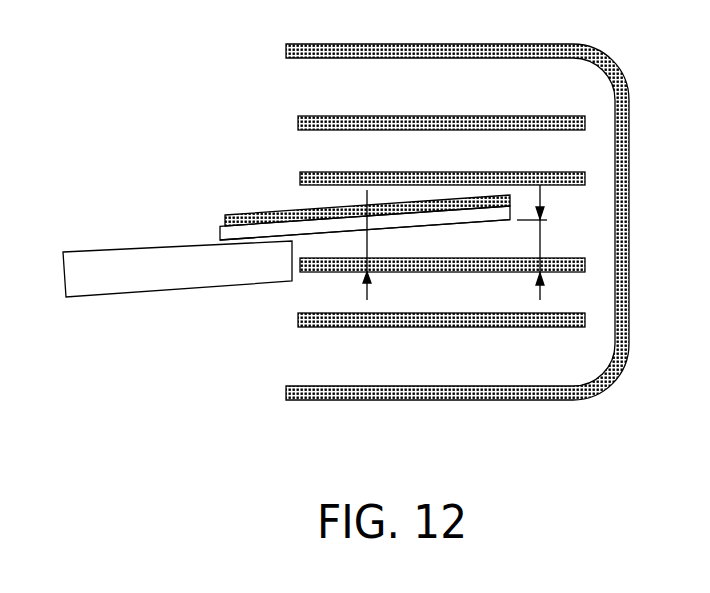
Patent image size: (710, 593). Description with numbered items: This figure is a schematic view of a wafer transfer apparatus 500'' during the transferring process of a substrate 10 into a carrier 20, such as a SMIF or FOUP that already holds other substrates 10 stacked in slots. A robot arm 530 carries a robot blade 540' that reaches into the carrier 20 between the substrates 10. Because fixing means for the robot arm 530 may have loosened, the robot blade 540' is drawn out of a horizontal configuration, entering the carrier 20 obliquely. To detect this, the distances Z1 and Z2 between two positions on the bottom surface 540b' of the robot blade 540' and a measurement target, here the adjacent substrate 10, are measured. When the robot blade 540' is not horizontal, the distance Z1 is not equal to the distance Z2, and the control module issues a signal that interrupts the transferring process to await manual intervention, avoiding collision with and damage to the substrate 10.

The wafer transfer apparatus 500'' is at (344, 222).
The substrate 10 is at (253, 213).
The carrier 20 is at (630, 112).
The robot blade 540' is at (325, 216).
The bottom surface of the robot blade 540b' is at (365, 347).
The robot arm 530 is at (179, 277).
The distance Z1 is at (372, 247).
The distance Z2 is at (540, 241).